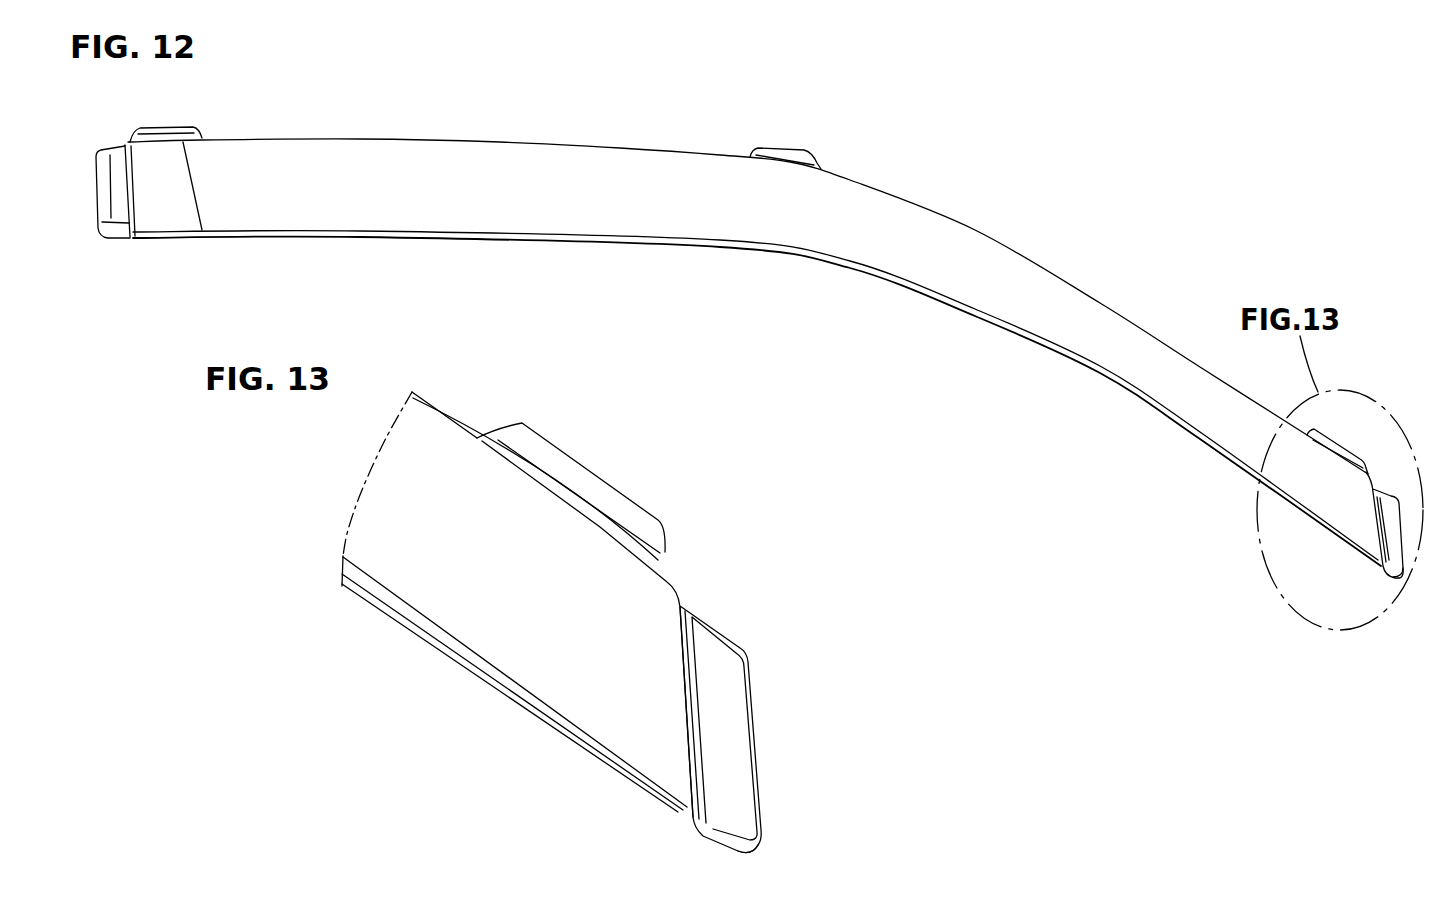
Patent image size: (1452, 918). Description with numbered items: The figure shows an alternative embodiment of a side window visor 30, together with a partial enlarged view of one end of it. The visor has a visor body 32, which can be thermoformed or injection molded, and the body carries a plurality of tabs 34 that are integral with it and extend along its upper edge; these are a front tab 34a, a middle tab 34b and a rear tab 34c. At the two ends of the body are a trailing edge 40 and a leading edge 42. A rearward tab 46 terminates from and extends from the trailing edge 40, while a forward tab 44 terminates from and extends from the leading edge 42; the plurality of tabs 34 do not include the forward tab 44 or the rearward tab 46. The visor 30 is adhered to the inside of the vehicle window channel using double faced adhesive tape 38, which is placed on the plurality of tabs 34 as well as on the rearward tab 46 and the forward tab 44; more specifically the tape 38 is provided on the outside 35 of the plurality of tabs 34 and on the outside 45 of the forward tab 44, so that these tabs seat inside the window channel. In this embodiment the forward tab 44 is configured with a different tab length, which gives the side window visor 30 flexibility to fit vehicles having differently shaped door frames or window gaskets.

In FIG. 12, the side window visor 30 is at (1070, 172).
In FIG. 12, the visor body 32 is at (791, 229).
In FIG. 12, the plurality of tabs 34 is at (172, 128).
In FIG. 13, the plurality of tabs 34 is at (612, 487).
In FIG. 12, the front tab 34a is at (1373, 447).
In FIG. 13, the front tab 34a is at (537, 429).
In FIG. 12, the middle tab 34b is at (820, 168).
In FIG. 12, the rear tab 34c is at (201, 136).
In FIG. 13, the outside of the plurality of tabs 35 is at (660, 559).
In FIG. 12, the double faced adhesive tape 38 is at (155, 134).
In FIG. 13, the double faced adhesive tape 38 is at (648, 525).
In FIG. 12, the trailing edge 40 is at (128, 182).
In FIG. 12, the leading edge 42 is at (1370, 527).
In FIG. 13, the leading edge 42 is at (683, 740).
In FIG. 12, the forward tab 44 is at (1400, 580).
In FIG. 13, the forward tab 44 is at (757, 852).
In FIG. 13, the outside of the forward tab 45 is at (690, 623).
In FIG. 12, the rearward tab 46 is at (127, 253).